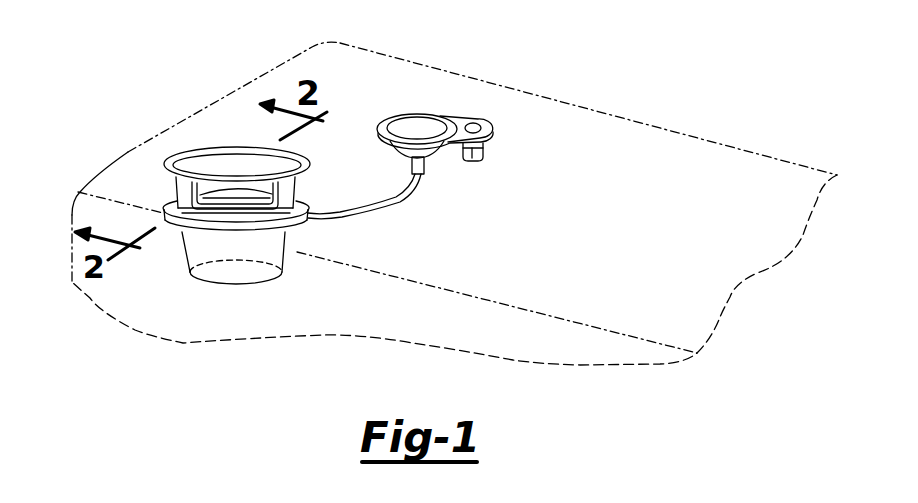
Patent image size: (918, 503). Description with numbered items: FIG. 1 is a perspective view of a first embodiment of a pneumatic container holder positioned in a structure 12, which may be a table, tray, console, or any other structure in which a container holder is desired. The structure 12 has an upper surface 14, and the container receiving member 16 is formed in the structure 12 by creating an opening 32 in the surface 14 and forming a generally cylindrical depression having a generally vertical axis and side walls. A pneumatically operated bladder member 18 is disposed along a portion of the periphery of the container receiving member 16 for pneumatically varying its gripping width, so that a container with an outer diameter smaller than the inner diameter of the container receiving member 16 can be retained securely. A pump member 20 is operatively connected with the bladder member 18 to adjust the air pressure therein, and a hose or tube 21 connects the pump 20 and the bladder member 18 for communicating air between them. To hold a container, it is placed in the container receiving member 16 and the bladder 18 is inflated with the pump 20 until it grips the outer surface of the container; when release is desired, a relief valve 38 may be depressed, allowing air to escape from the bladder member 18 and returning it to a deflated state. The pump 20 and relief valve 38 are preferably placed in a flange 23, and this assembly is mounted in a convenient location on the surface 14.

The structure 12 is at (125, 153).
The upper surface 14 is at (713, 155).
The container receiving member 16 is at (185, 258).
The bladder member 18 is at (166, 216).
The pump member 20 is at (437, 114).
The hose or tube 21 is at (377, 203).
The flange 23 is at (450, 158).
The opening 32 is at (197, 165).
The relief valve 38 is at (477, 162).